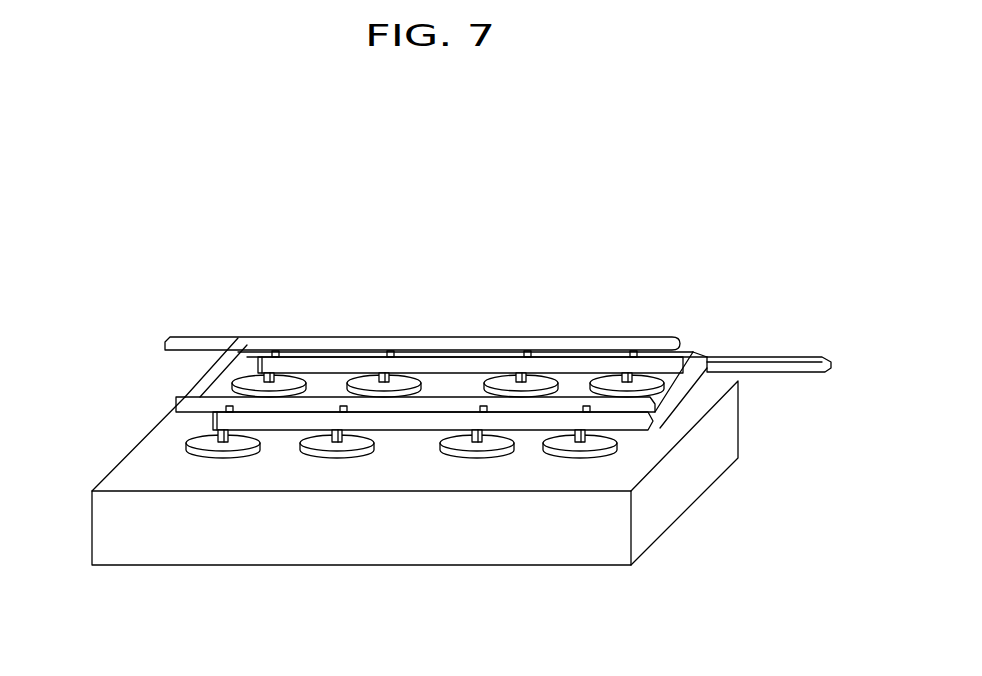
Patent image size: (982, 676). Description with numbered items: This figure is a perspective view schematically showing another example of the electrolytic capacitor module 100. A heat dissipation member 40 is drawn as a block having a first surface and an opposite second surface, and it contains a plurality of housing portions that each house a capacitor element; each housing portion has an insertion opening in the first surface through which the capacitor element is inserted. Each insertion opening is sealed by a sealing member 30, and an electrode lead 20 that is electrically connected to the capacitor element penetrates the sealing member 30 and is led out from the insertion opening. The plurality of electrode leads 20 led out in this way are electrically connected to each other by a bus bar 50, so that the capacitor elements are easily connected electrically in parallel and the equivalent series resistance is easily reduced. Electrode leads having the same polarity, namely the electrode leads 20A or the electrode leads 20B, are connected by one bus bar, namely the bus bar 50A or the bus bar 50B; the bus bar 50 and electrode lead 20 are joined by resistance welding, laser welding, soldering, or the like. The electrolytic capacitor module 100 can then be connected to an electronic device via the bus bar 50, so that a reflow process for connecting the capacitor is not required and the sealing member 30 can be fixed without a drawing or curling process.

The electrolytic capacitor module 100 is at (461, 153).
The electrode lead 20 is at (500, 508).
The electrode lead 20A is at (632, 378).
The electrode lead 20B is at (632, 380).
The sealing member 30 is at (195, 452).
The heat dissipation member 40 is at (108, 525).
The bus bar 50 is at (508, 353).
The bus bar 50A is at (660, 337).
The bus bar 50B is at (785, 368).